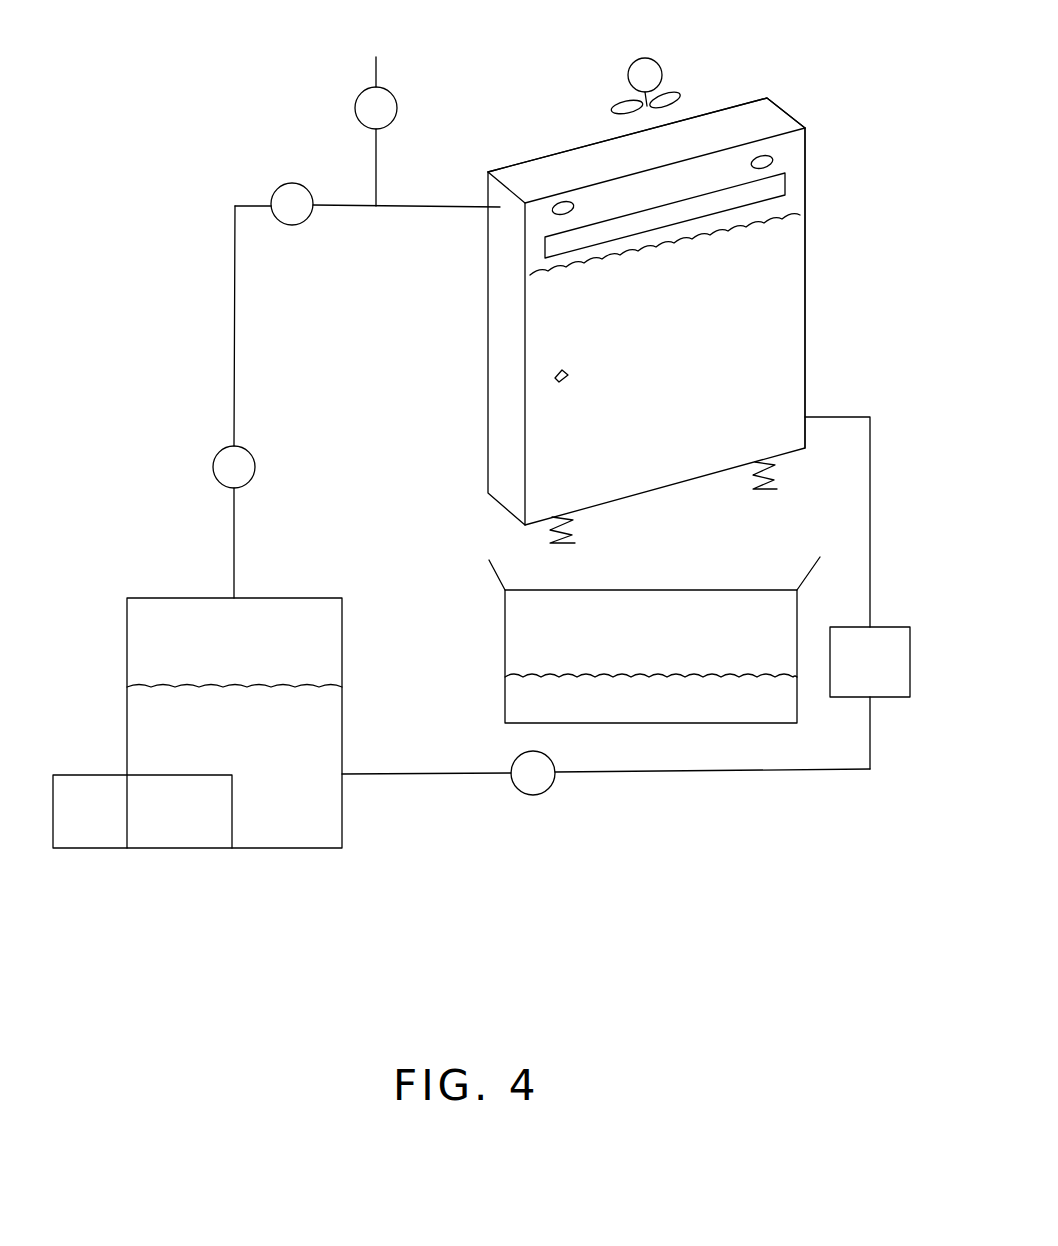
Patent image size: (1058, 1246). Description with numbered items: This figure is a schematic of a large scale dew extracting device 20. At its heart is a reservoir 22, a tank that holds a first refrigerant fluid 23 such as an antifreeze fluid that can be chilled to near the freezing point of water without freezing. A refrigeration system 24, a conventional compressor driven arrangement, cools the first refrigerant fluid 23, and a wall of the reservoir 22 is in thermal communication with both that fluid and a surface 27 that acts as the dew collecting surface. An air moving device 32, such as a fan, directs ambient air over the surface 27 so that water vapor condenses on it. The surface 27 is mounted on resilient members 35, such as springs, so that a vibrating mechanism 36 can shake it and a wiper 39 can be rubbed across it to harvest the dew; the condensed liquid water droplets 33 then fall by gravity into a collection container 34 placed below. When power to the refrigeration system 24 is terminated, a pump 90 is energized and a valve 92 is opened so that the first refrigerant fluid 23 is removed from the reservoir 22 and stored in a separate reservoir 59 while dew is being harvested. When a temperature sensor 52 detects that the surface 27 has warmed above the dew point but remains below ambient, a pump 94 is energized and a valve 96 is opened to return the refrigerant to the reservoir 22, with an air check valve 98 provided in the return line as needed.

The dew extracting device 20 is at (605, 72).
The reservoir 22 is at (807, 260).
The first refrigerant fluid 23 is at (783, 230).
The refrigeration system 24 is at (170, 834).
The surface 27 is at (770, 343).
The air moving device 32 is at (675, 98).
The condensed liquid water droplets 33 is at (530, 698).
The collection container 34 is at (505, 626).
The resilient members 35 is at (578, 531).
The vibrating mechanism 36 is at (780, 156).
The wiper 39 is at (545, 243).
The temperature sensor 52 is at (555, 378).
The separate reservoir 59 is at (345, 643).
The pump 90 is at (548, 790).
The valve 92 is at (893, 627).
The pump 94 is at (212, 461).
The valve 96 is at (287, 182).
The air check valve 98 is at (355, 110).